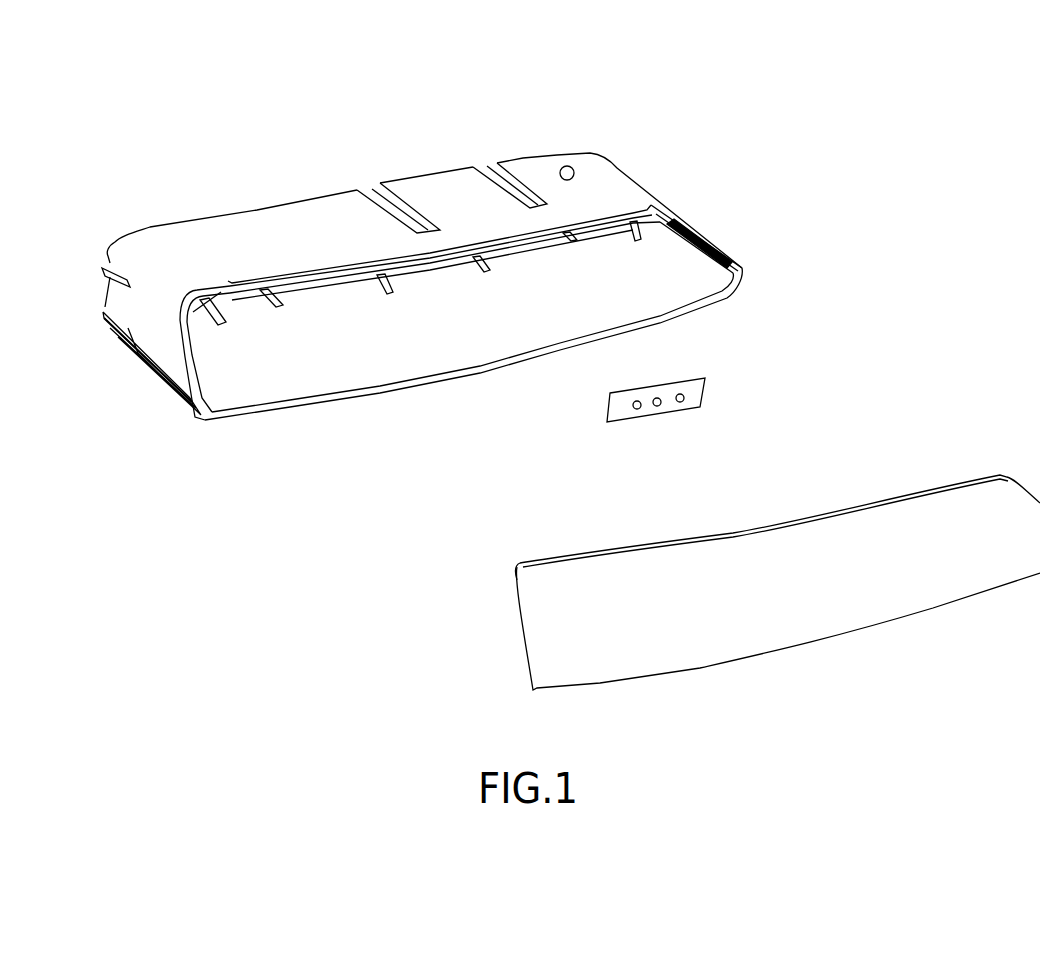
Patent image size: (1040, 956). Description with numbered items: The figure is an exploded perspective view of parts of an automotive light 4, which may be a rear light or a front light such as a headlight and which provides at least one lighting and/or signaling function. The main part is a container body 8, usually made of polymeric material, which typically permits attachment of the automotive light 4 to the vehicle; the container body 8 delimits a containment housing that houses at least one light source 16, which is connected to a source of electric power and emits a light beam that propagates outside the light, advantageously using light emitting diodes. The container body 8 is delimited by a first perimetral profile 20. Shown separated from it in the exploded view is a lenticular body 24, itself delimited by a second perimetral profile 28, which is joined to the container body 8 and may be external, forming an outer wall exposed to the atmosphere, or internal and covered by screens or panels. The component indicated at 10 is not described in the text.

The automotive light 4 is at (146, 176).
The container body 8 is at (248, 245).
The housing 10 is at (303, 368).
The light source 16 is at (690, 393).
The first perimetral profile 20 is at (727, 247).
The lenticular body 24 is at (740, 613).
The second perimetral profile 28 is at (963, 473).